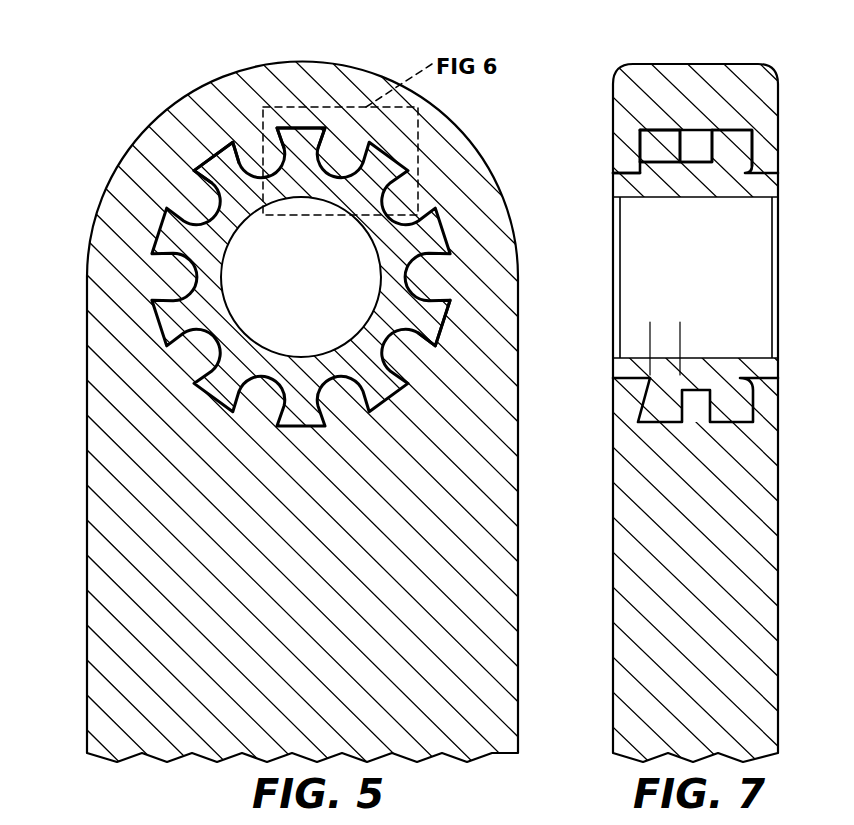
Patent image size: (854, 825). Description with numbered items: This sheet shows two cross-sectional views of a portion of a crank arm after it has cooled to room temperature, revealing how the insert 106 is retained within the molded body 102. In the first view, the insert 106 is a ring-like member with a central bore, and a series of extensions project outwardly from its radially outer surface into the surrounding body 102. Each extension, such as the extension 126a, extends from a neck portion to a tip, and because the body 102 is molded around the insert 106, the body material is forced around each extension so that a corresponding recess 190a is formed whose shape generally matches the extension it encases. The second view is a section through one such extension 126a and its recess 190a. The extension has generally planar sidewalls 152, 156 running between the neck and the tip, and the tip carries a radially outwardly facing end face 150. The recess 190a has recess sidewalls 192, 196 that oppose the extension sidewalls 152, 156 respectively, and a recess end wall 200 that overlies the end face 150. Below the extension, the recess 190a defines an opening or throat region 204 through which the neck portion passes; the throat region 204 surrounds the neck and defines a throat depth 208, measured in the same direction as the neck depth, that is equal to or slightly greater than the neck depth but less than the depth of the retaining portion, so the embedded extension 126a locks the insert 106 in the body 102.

In FIG. 5, the body 102 is at (115, 452).
In FIG. 5, the insert 106 is at (152, 318).
In FIG. 5, the extension 126a is at (273, 138).
In FIG. 5, the recess 190a is at (338, 150).
In FIG. 7, the recess 190a is at (637, 112).
In FIG. 5, the throat region 204 is at (410, 342).
In FIG. 7, the throat region 204 is at (626, 190).
In FIG. 7, the end face 150 is at (683, 145).
In FIG. 7, the sidewall 152 is at (672, 165).
In FIG. 7, the sidewall 156 is at (655, 168).
In FIG. 7, the recess sidewall 192 is at (630, 140).
In FIG. 7, the recess sidewall 196 is at (730, 180).
In FIG. 7, the recess end wall 200 is at (652, 125).
In FIG. 7, the throat depth 208 is at (706, 335).